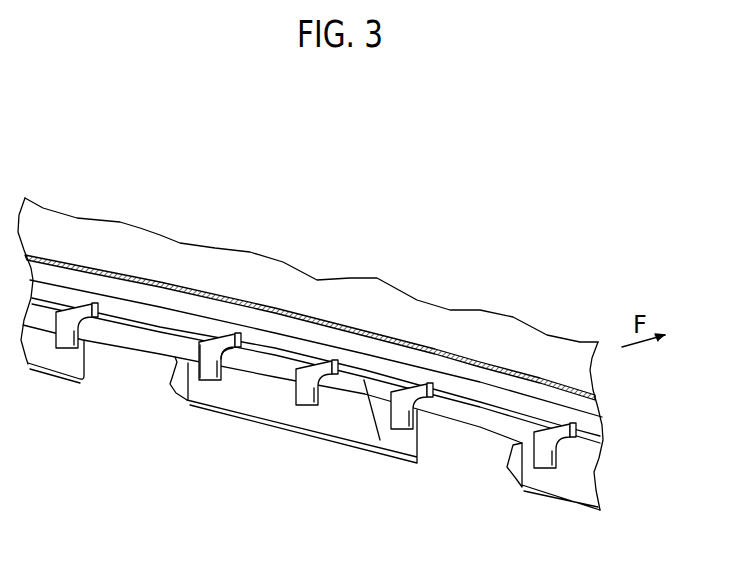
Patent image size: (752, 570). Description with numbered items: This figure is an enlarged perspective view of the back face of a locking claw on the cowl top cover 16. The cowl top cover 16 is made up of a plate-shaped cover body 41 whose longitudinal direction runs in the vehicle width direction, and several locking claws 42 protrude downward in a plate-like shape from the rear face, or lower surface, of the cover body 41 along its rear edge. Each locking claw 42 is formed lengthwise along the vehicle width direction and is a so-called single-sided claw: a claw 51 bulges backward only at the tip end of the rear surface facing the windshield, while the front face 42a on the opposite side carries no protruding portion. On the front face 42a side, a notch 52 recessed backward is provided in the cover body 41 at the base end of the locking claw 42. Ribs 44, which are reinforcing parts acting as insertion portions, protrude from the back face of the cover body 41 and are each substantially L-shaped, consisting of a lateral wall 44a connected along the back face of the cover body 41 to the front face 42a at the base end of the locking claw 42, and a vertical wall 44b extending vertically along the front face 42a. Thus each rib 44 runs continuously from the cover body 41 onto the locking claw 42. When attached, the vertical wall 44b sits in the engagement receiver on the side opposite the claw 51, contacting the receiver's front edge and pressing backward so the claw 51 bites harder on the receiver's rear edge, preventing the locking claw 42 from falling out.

The cowl top cover 16 is at (378, 272).
The cover body 41 is at (463, 323).
The locking claw 42 is at (48, 372).
The front face 42a is at (328, 425).
The rib 44 is at (425, 390).
The lateral wall 44a is at (230, 353).
The vertical wall 44b is at (210, 368).
The claw 51 is at (173, 393).
The notch 52 is at (380, 440).